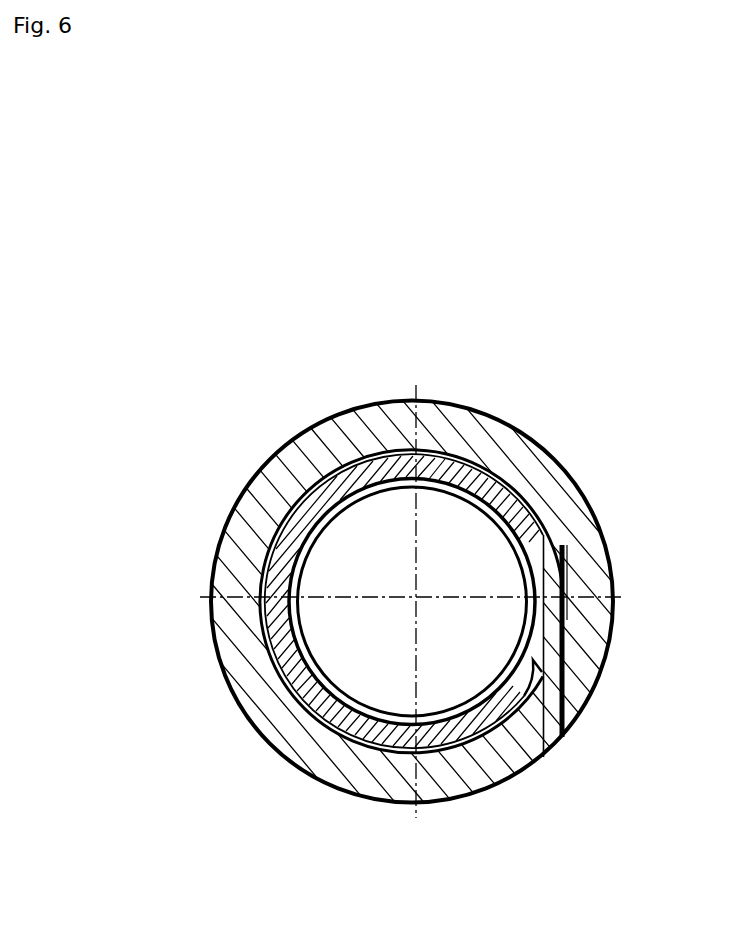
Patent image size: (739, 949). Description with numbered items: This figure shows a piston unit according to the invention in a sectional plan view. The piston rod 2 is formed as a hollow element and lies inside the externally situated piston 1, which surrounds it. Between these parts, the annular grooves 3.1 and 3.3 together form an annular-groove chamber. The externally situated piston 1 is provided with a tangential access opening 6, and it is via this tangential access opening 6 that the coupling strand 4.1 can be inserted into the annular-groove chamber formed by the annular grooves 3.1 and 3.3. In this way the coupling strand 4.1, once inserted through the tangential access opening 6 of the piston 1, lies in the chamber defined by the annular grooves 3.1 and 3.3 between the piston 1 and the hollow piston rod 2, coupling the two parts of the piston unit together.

The piston 1 is at (343, 752).
The piston rod 2 is at (500, 470).
The annular groove 3.1 is at (567, 542).
The annular groove 3.3 is at (520, 725).
The coupling strand 4.1 is at (582, 700).
The tangential access opening 6 is at (545, 757).